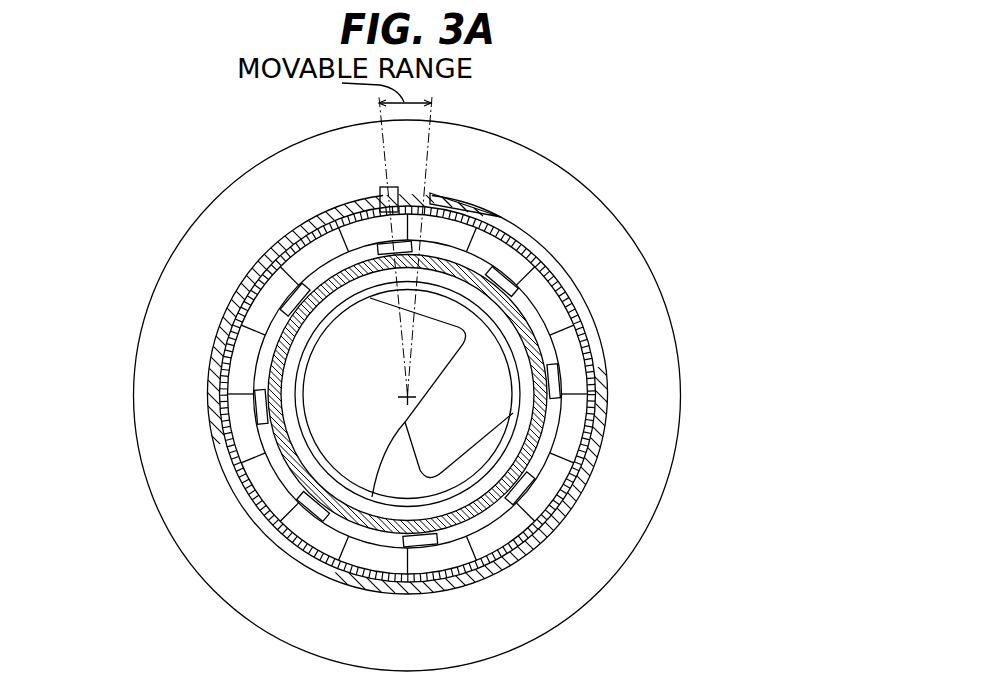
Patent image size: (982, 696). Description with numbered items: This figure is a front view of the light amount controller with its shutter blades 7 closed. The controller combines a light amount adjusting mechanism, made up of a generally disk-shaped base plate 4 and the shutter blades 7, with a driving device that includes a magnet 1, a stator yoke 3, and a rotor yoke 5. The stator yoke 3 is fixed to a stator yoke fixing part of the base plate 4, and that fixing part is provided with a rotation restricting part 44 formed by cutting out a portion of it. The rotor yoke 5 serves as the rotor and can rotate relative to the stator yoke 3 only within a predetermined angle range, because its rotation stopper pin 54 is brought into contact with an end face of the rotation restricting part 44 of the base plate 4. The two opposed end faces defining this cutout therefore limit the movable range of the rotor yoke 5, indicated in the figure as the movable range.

The magnet 1 is at (590, 337).
The stator yoke 3 is at (603, 443).
The base plate 4 is at (600, 557).
The rotor yoke 5 is at (540, 288).
The shutter blades 7 is at (345, 362).
The rotation restricting part 44 is at (420, 197).
The rotation stopper pin 54 is at (381, 190).